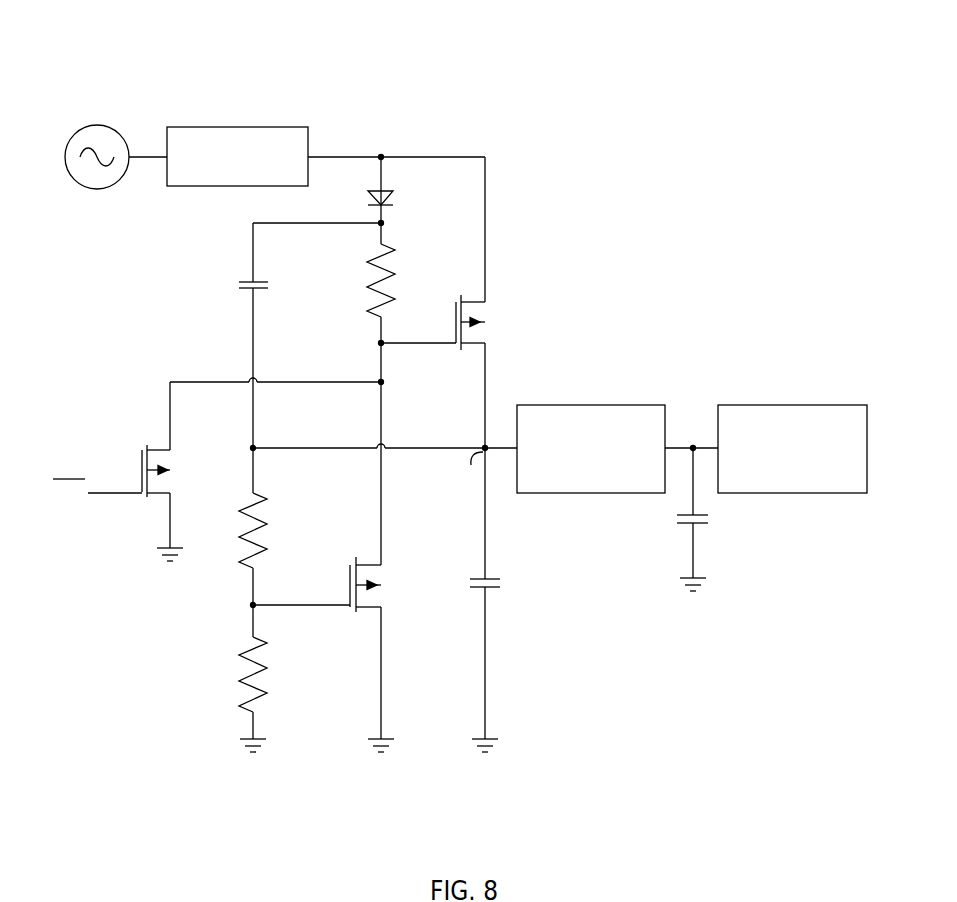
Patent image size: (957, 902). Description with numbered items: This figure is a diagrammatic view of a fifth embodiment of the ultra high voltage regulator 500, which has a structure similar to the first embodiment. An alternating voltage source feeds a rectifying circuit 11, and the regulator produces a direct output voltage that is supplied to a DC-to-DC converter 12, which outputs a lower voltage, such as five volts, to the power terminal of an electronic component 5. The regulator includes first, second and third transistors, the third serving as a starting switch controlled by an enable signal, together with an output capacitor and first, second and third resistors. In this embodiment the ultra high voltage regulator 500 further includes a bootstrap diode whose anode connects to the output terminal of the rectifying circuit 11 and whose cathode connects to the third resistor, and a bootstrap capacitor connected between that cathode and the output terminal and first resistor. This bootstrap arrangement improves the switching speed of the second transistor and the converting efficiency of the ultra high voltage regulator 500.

The ultra high voltage regulator 500 is at (485, 43).
The rectifying circuit 11 is at (232, 127).
The DC-to-DC converter 12 is at (592, 405).
The electronic component 5 is at (755, 405).